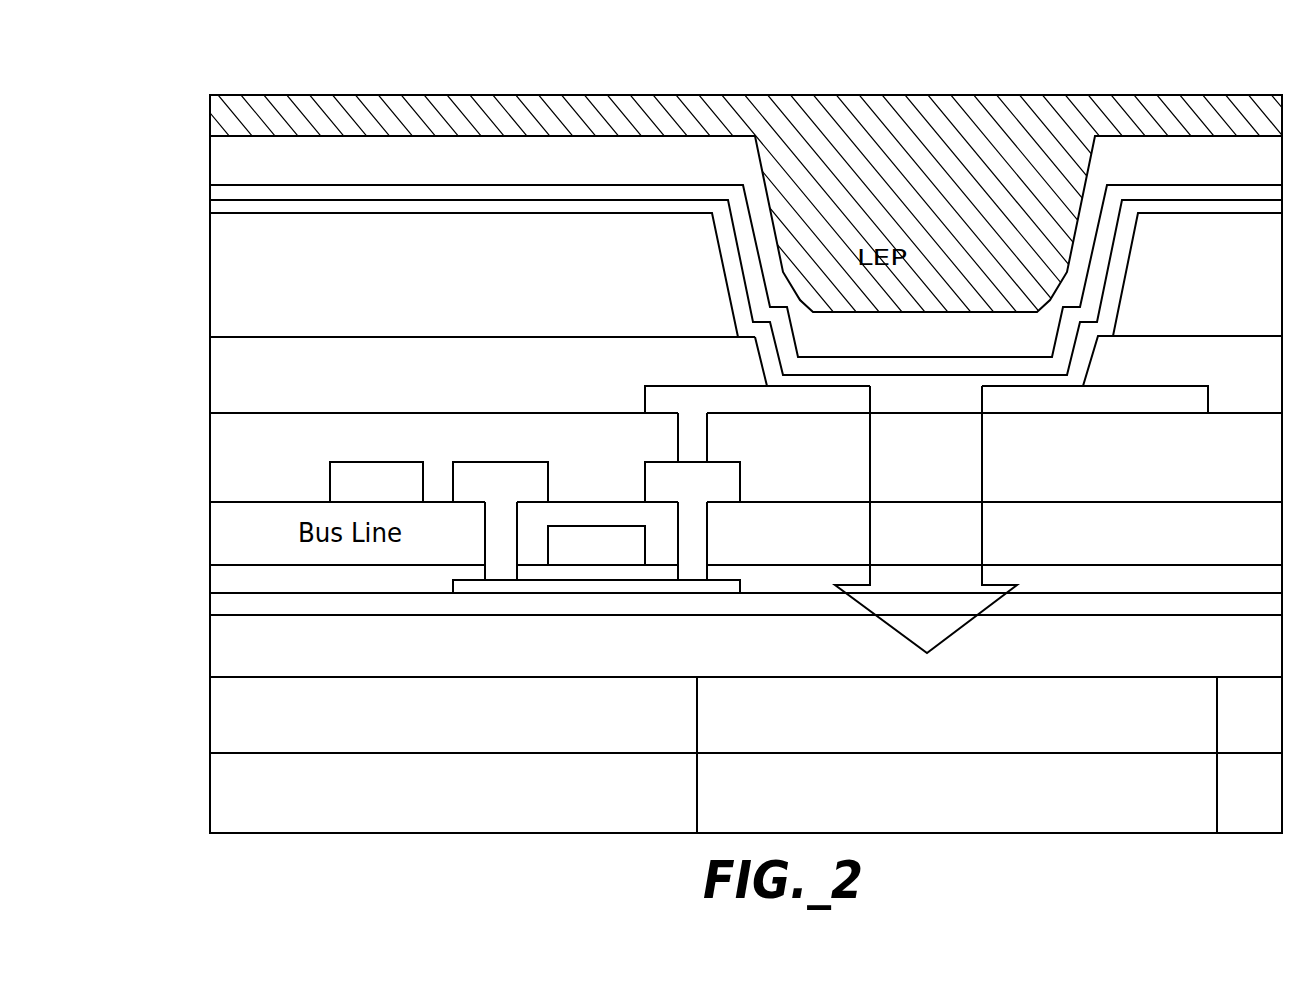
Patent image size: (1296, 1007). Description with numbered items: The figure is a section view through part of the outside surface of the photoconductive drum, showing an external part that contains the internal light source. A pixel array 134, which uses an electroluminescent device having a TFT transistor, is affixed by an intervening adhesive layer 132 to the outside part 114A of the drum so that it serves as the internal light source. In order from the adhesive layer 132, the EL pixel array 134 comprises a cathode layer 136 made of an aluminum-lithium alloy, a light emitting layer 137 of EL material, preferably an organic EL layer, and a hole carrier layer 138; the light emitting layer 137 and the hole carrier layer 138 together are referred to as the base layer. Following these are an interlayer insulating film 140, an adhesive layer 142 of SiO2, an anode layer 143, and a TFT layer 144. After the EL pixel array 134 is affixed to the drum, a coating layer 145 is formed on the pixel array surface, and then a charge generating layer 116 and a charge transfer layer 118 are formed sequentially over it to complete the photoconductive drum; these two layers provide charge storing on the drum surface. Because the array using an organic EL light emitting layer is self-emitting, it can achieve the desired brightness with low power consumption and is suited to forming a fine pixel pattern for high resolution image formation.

The outside part of the drum 114A is at (746, 69).
The adhesive layer 132 is at (991, 160).
The cathode layer 136 is at (221, 170).
The light emitting layer 137 is at (927, 352).
The pixel array 134 is at (1148, 238).
The interlayer insulating film 140 is at (528, 282).
The adhesive layer 142 is at (573, 385).
The hole carrier layer 138 is at (1088, 375).
The anode layer 143 is at (1175, 385).
The TFT layer 144 is at (523, 450).
The coating layer 145 is at (746, 646).
The charge generating layer 116 is at (746, 755).
The charge transfer layer 118 is at (746, 805).